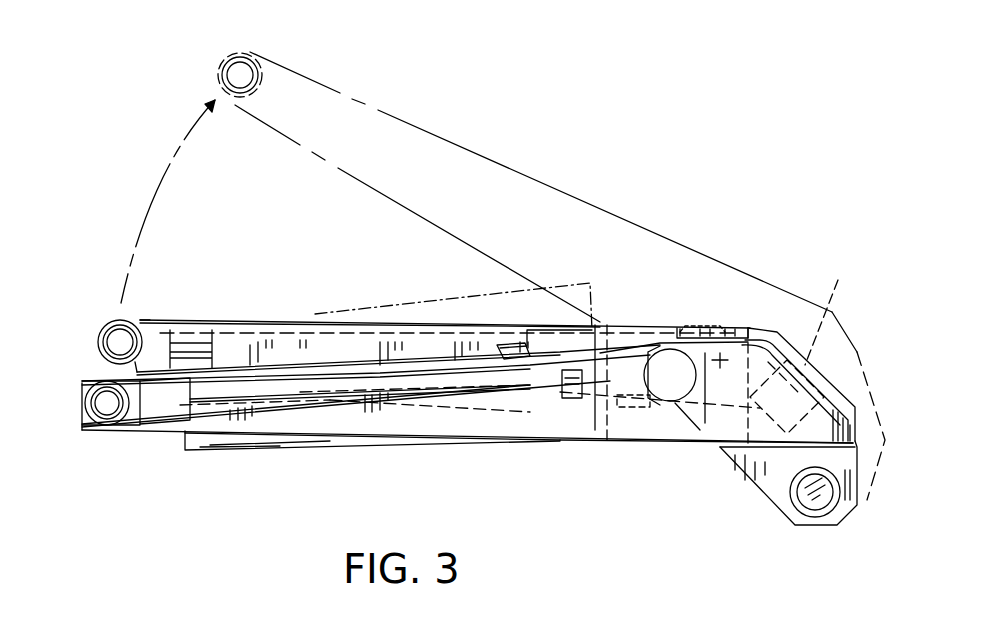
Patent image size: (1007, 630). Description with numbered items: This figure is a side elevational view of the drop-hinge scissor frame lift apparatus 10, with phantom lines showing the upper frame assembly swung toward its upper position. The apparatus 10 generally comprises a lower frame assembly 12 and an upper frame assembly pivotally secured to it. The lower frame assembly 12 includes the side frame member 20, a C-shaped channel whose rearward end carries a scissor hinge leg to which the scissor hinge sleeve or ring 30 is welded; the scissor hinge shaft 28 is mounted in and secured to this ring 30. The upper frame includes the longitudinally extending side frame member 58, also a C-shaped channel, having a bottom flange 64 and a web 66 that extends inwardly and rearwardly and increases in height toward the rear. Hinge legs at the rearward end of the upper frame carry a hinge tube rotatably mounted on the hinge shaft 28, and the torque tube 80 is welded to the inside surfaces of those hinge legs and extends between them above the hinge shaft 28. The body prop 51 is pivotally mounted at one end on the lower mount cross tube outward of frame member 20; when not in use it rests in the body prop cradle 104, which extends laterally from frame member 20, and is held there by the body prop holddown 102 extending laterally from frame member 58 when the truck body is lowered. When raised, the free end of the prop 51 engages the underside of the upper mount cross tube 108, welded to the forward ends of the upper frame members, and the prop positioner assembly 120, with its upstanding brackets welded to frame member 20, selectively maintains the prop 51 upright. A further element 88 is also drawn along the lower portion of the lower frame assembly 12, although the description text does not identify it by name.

The drop-hinge scissor frame lift apparatus 10 is at (773, 232).
The lower frame assembly 12 is at (520, 450).
The side frame member 20 is at (320, 428).
The scissor hinge shaft 28 is at (797, 493).
The scissor hinge sleeve or ring 30 is at (792, 520).
The body prop 51 is at (397, 392).
The side frame member 58 is at (375, 330).
The bottom flange 64 is at (455, 450).
The web 66 is at (347, 353).
The torque tube 80 is at (845, 377).
The bottom plate 88 is at (250, 440).
The body prop holddown 102 is at (511, 346).
The body prop cradle 104 is at (572, 400).
The upper mount cross tube 108 is at (103, 320).
The prop positioner assembly 120 is at (235, 318).